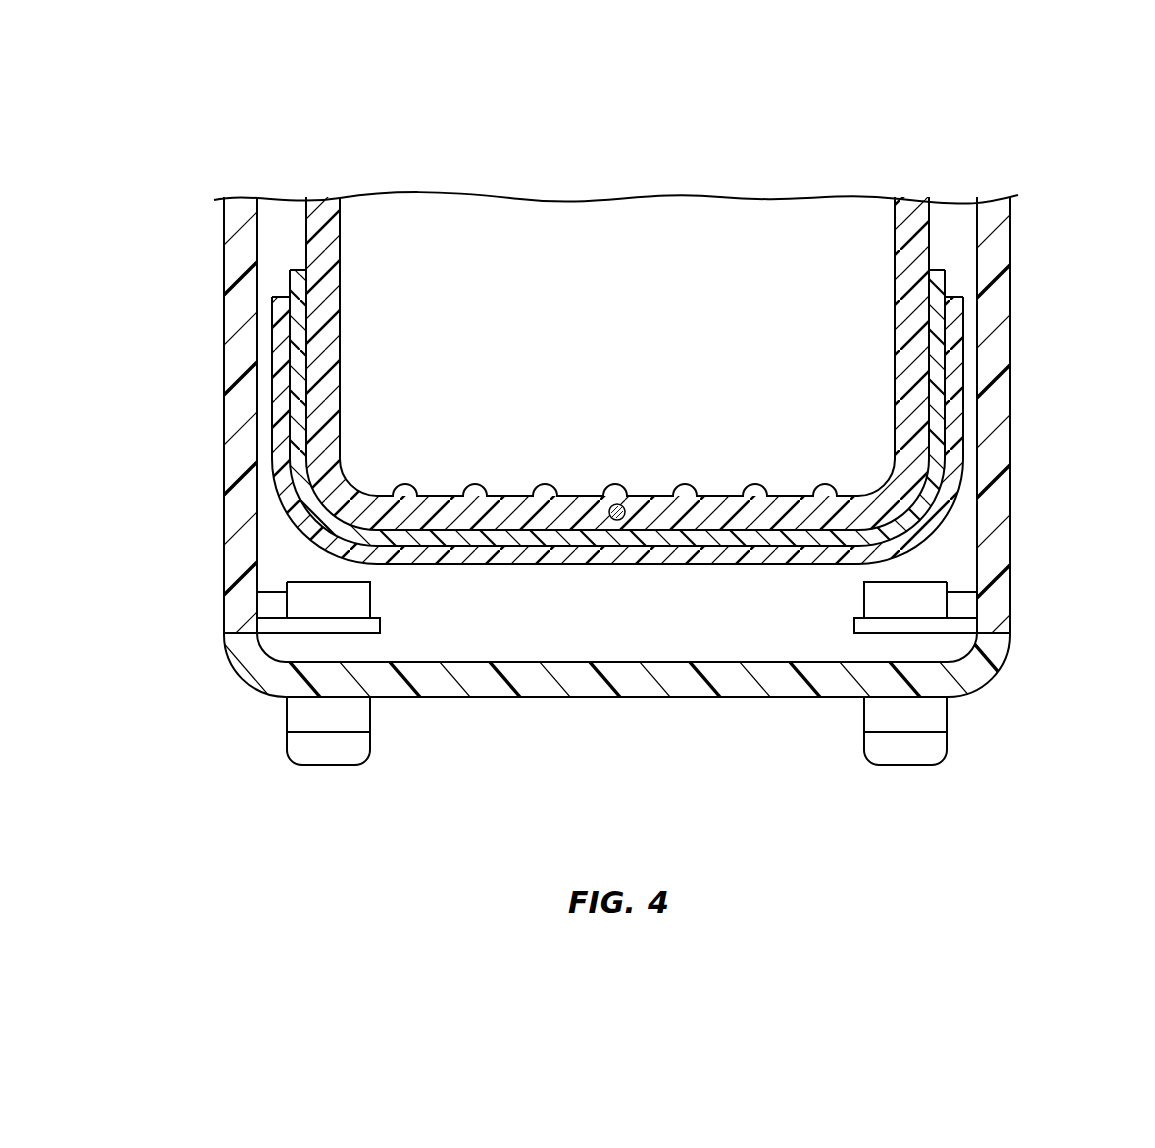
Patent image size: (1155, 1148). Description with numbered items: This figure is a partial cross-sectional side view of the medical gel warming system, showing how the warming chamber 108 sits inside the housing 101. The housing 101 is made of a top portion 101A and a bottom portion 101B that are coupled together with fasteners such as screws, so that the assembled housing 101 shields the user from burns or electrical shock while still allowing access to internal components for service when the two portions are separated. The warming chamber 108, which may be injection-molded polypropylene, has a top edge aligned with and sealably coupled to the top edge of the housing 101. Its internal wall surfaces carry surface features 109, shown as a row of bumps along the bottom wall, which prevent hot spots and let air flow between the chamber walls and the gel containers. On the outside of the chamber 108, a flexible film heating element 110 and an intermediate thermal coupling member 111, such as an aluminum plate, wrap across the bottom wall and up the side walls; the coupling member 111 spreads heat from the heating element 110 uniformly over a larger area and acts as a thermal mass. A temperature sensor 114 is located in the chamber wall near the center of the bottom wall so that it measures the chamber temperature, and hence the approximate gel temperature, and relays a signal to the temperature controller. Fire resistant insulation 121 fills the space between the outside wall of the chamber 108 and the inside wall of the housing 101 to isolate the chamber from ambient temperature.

The housing 101 is at (1022, 633).
The top portion 101A is at (995, 436).
The bottom portion 101B is at (980, 672).
The warming chamber 108 is at (832, 186).
The surface features 109 is at (407, 484).
The heating element 110 is at (952, 325).
The intermediate thermal coupling member 111 is at (937, 282).
The temperature sensor 114 is at (620, 521).
The fire resistant insulation 121 is at (288, 552).